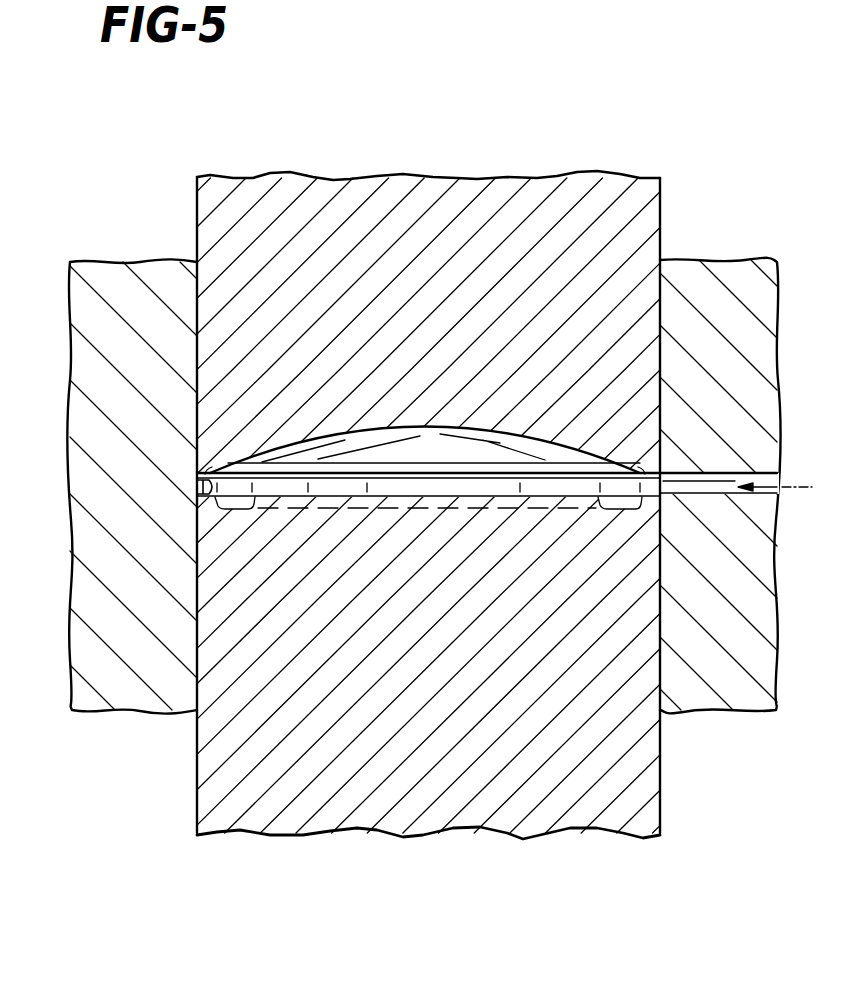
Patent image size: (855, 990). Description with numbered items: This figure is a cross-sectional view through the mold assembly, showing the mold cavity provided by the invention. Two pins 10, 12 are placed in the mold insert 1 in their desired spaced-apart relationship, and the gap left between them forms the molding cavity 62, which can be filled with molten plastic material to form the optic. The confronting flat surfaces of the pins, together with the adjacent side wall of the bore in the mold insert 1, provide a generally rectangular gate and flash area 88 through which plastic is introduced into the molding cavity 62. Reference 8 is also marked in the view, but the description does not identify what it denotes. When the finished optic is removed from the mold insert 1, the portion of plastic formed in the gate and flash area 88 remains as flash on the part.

The mold insert 1 is at (120, 268).
The fluid passage 8 is at (775, 482).
The pin 10 is at (478, 180).
The pin 12 is at (450, 836).
The molding cavity 62 is at (428, 467).
The gate and flash area 88 is at (197, 491).